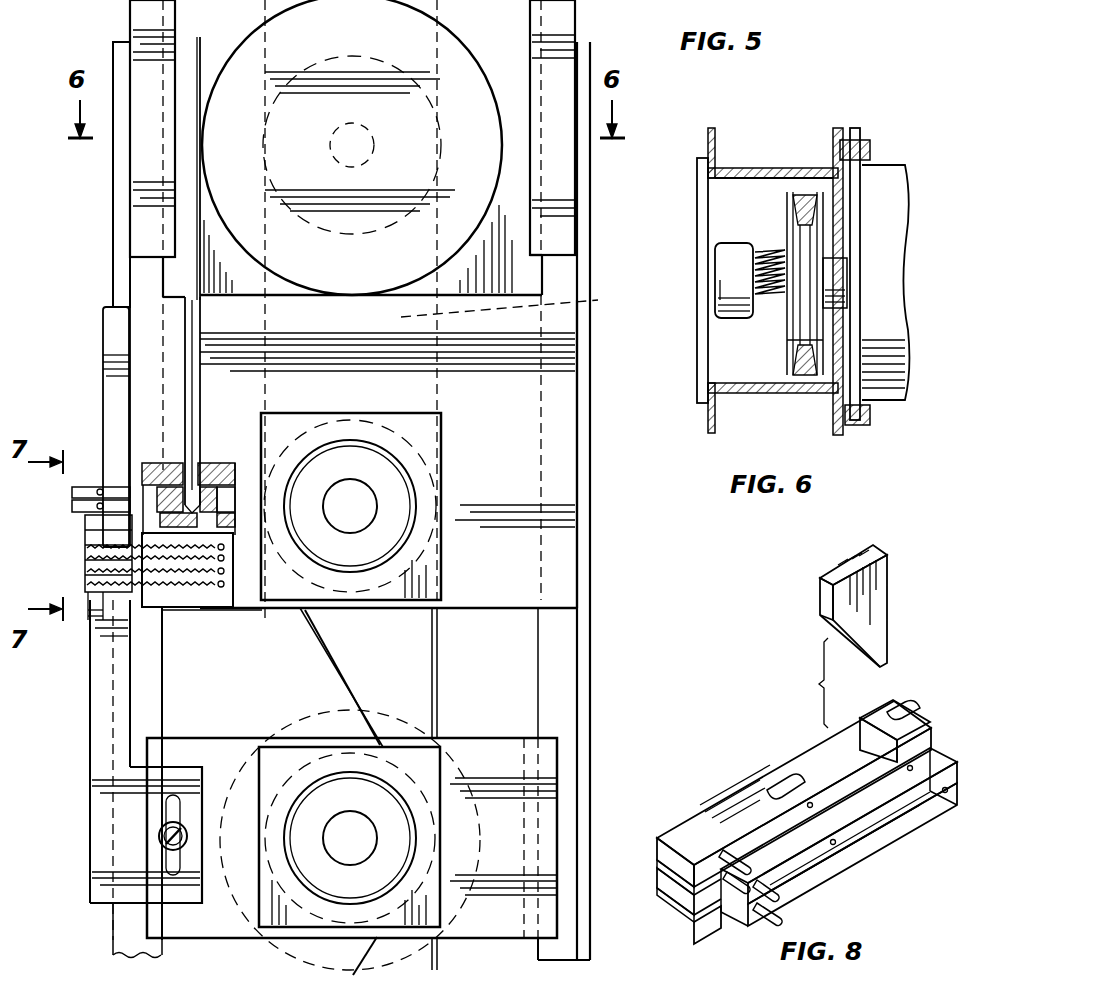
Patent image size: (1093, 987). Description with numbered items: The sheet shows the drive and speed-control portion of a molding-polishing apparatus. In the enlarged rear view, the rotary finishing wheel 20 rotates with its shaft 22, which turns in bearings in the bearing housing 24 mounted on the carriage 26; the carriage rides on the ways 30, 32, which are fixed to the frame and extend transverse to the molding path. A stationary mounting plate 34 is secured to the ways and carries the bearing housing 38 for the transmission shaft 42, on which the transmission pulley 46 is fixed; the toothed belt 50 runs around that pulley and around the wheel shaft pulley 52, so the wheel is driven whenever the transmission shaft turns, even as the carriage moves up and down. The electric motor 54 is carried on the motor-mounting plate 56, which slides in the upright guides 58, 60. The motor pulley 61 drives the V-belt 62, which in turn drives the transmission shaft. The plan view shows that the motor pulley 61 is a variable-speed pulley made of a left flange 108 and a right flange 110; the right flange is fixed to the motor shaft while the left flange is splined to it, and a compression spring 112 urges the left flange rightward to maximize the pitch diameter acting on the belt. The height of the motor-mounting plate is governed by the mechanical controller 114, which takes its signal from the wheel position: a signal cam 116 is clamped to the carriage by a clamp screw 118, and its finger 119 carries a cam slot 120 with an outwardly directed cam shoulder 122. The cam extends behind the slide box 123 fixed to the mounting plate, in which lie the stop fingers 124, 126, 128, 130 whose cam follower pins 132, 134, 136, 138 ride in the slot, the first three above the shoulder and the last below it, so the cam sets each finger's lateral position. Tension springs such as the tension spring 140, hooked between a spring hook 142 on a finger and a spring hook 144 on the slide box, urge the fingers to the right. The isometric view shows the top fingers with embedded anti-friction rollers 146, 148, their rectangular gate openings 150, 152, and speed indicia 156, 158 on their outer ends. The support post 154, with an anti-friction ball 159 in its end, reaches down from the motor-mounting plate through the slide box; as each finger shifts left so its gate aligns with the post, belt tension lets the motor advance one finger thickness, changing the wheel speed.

In FIG. 5, the rotary finishing wheel 20 is at (393, 722).
In FIG. 5, the shaft 22 is at (335, 858).
In FIG. 5, the bearing housing 24 is at (293, 862).
In FIG. 5, the carriage 26 is at (548, 762).
In FIG. 5, the way 30 is at (570, 668).
In FIG. 5, the way 32 is at (145, 710).
In FIG. 5, the mounting plate 34 is at (563, 480).
In FIG. 5, the bearing housing 38 is at (440, 465).
In FIG. 5, the transmission shaft 42 is at (370, 518).
In FIG. 5, the transmission pulley 46 is at (366, 612).
In FIG. 5, the toothed belt 50 is at (437, 655).
In FIG. 5, the wheel shaft pulley 52 is at (312, 712).
In FIG. 5, the electric motor 54 is at (420, 163).
In FIG. 6, the electric motor 54 is at (893, 178).
In FIG. 5, the motor-mounting plate 56 is at (505, 207).
In FIG. 6, the motor-mounting plate 56 is at (852, 158).
In FIG. 5, the upright guide 58 is at (565, 178).
In FIG. 5, the upright guide 60 is at (135, 210).
In FIG. 6, the motor pulley 61 is at (788, 208).
In FIG. 5, the V-belt 62 is at (519, 298).
In FIG. 6, the V-belt 62 is at (803, 198).
In FIG. 6, the left flange 108 is at (788, 356).
In FIG. 6, the right flange 110 is at (823, 330).
In FIG. 6, the compression spring 112 is at (745, 318).
In FIG. 5, the controller 114 is at (80, 553).
In FIG. 5, the signal cam 116 is at (95, 753).
In FIG. 5, the clamp screw 118 is at (160, 835).
In FIG. 5, the finger 119 is at (95, 677).
In FIG. 5, the cam slot 120 is at (115, 612).
In FIG. 5, the cam shoulder 122 is at (95, 522).
In FIG. 5, the slide box 123 is at (235, 465).
In FIG. 8, the stop finger 124 is at (660, 842).
In FIG. 8, the stop finger 126 is at (660, 888).
In FIG. 8, the stop finger 128 is at (865, 822).
In FIG. 8, the stop finger 130 is at (845, 872).
In FIG. 8, the cam follower pin 132 is at (722, 855).
In FIG. 8, the cam follower pin 134 is at (700, 912).
In FIG. 8, the cam follower pin 136 is at (762, 918).
In FIG. 8, the cam follower pin 138 is at (778, 895).
In FIG. 5, the tension spring 140 is at (265, 612).
In FIG. 5, the spring hook 142 is at (95, 586).
In FIG. 5, the spring hook 144 is at (225, 584).
In FIG. 8, the roller 146 is at (790, 772).
In FIG. 8, the roller 148 is at (905, 710).
In FIG. 8, the gate opening 150 is at (862, 718).
In FIG. 8, the gate opening 152 is at (865, 735).
In FIG. 5, the support post 154 is at (195, 340).
In FIG. 8, the support post 154 is at (860, 560).
In FIG. 8, the indicia 156 is at (660, 865).
In FIG. 8, the indicia 158 is at (675, 895).
In FIG. 8, the anti-friction ball 159 is at (878, 656).